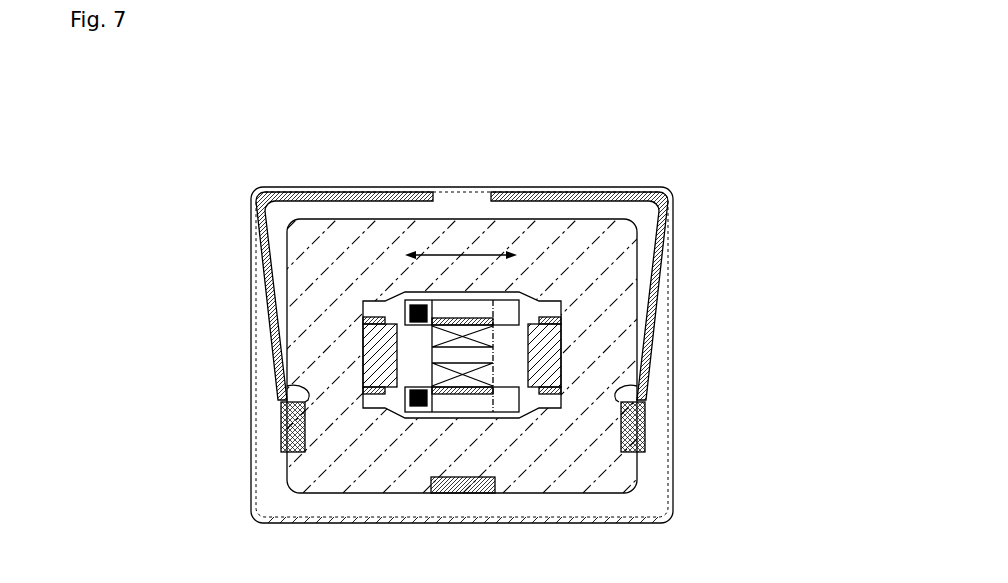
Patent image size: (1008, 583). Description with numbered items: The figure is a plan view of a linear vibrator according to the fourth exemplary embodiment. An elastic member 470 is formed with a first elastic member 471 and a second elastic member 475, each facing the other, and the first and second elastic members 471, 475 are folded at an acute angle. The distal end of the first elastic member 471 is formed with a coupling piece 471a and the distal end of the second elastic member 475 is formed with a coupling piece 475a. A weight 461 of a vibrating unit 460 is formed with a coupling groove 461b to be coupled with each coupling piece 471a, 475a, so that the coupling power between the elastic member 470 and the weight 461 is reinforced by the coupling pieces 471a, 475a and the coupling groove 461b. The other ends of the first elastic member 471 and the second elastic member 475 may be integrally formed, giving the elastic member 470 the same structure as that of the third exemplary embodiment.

The vibrating unit 460 is at (758, 243).
The weight 461 is at (633, 253).
The coupling groove 461b is at (308, 397).
The elastic member 470 is at (415, 83).
The first elastic member 471 is at (398, 192).
The second elastic member 475 is at (507, 192).
The coupling piece 471a is at (282, 430).
The coupling piece 475a is at (647, 425).